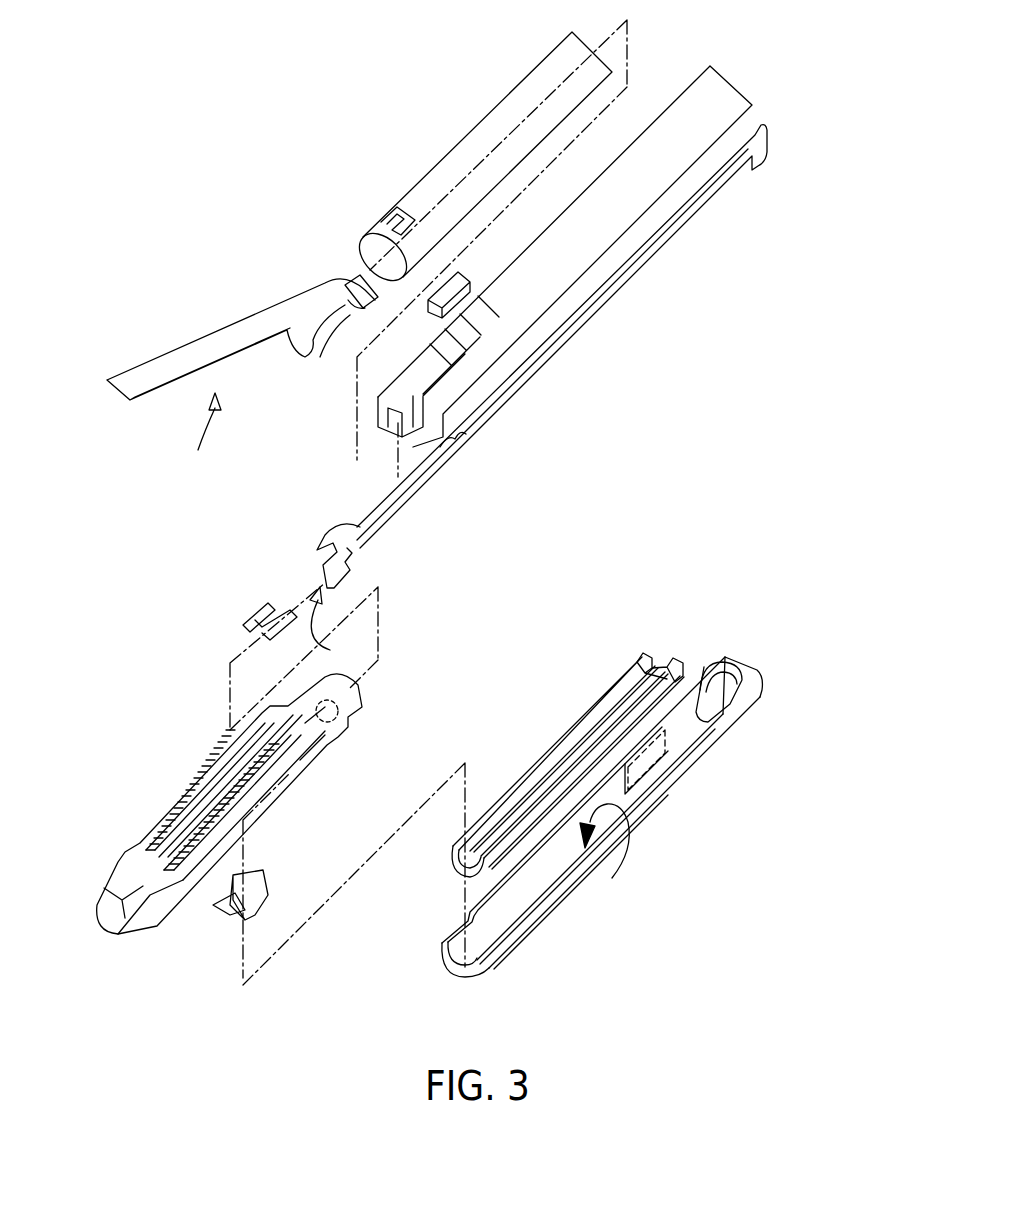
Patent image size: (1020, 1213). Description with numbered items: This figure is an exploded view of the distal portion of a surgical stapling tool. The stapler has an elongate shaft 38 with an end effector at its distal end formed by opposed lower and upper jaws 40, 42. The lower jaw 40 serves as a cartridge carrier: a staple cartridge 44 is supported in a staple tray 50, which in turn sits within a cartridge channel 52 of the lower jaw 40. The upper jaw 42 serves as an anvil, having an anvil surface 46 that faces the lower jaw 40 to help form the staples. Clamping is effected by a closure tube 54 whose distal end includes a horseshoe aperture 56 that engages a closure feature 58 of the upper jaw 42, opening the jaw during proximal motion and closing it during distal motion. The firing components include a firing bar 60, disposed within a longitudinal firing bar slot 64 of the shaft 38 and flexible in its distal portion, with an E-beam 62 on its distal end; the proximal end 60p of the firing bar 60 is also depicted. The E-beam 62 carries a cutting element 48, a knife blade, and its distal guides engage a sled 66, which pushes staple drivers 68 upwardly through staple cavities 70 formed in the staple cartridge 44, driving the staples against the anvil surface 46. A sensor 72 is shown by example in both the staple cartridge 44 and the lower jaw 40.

The elongate shaft 38 is at (724, 93).
The lower jaw 40 is at (695, 717).
The upper jaw 42 is at (207, 345).
The staple cartridge 44 is at (305, 762).
The anvil surface 46 is at (204, 441).
The cutting element 48 is at (333, 625).
The staple tray 50 is at (453, 870).
The cartridge channel 52 is at (604, 859).
The closure tube 54 is at (465, 150).
The horseshoe aperture 56 is at (396, 207).
The closure feature 58 is at (340, 335).
The firing bar 60 is at (565, 347).
The drive bar proximal end 60p is at (743, 677).
The E-beam 62 is at (323, 540).
The longitudinal firing bar slot 64 is at (392, 421).
The sled 66 is at (248, 627).
The staple drivers 68 is at (223, 903).
The staple cavities 70 is at (170, 822).
The sensor 72 is at (333, 727).